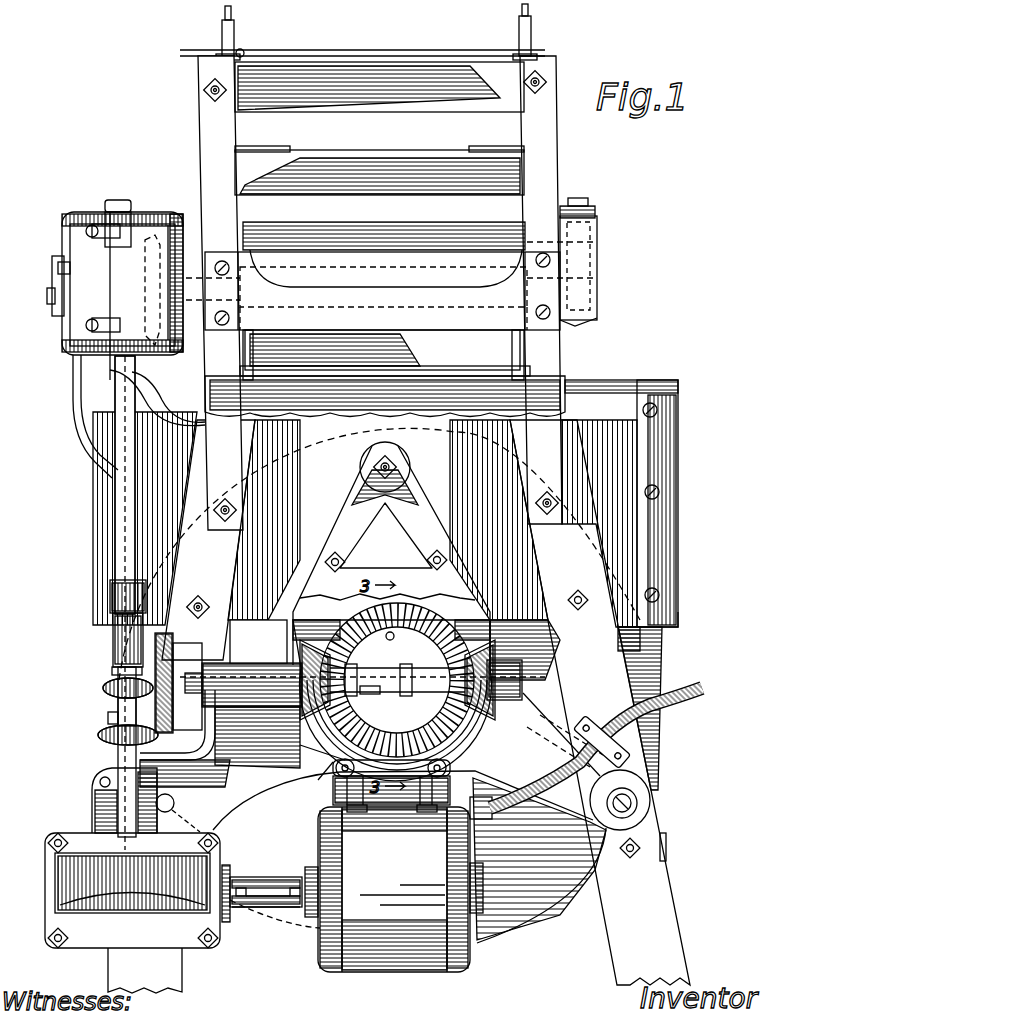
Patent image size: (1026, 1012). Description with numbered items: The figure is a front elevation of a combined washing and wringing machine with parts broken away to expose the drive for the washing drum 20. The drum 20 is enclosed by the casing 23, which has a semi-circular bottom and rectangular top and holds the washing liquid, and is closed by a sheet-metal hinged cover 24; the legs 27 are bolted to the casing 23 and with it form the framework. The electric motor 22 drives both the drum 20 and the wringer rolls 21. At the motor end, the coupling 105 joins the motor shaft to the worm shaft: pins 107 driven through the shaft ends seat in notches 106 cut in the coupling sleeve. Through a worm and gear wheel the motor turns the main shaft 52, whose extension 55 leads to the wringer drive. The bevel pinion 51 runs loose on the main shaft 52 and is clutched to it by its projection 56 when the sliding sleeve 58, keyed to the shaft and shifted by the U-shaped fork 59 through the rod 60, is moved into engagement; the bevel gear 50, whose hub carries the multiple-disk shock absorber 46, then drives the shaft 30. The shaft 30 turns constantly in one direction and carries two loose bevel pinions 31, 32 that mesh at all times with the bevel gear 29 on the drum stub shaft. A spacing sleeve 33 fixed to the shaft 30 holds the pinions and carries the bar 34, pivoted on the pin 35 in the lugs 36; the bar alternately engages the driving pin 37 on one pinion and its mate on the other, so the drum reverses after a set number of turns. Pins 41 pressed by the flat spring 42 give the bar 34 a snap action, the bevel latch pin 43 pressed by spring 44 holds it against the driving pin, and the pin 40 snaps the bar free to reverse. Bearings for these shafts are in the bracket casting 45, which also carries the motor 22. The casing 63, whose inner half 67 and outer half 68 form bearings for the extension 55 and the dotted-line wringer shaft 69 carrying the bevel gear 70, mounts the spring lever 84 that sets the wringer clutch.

The washing drum 20 is at (644, 638).
The wringer rolls 21 is at (447, 238).
The electric motor 22 is at (393, 973).
The casing 23 is at (648, 737).
The hinged cover 24 is at (630, 382).
The legs 27 is at (662, 896).
The bevel gear 29 is at (355, 622).
The shaft 30 is at (512, 688).
The bevel pinion 31 is at (305, 770).
The bevel pinion 32 is at (495, 722).
The spacing sleeve 33 is at (437, 615).
The bar 34 is at (452, 642).
The pin 35 is at (432, 683).
The lugs 36 is at (296, 662).
The pin 37 is at (322, 778).
The pin 40 is at (372, 643).
The pins 41 is at (370, 707).
The flat spring 42 is at (362, 695).
The bevel pin 43 is at (240, 652).
The spring 44 is at (290, 708).
The bracket casting 45 is at (342, 514).
The shock absorber 46 is at (220, 738).
The bevel gear 50 is at (150, 650).
The bevel pinion 51 is at (110, 742).
The main shaft 52 is at (118, 712).
The extension of the shaft 55 is at (125, 520).
The projection 56 is at (108, 720).
The sliding sleeve 58 is at (112, 675).
The U-shaped shifting fork 59 is at (103, 690).
The rod 60 is at (73, 389).
The casing 63 is at (118, 345).
The inner half of the casing 67 is at (131, 218).
The outside half of the casing 68 is at (80, 216).
The wringer shaft 69 is at (168, 270).
The bevel gear 70 is at (145, 268).
The lever 84 is at (55, 265).
The coupling 105 is at (255, 910).
The notches 106 is at (292, 885).
The pins 107 is at (298, 912).